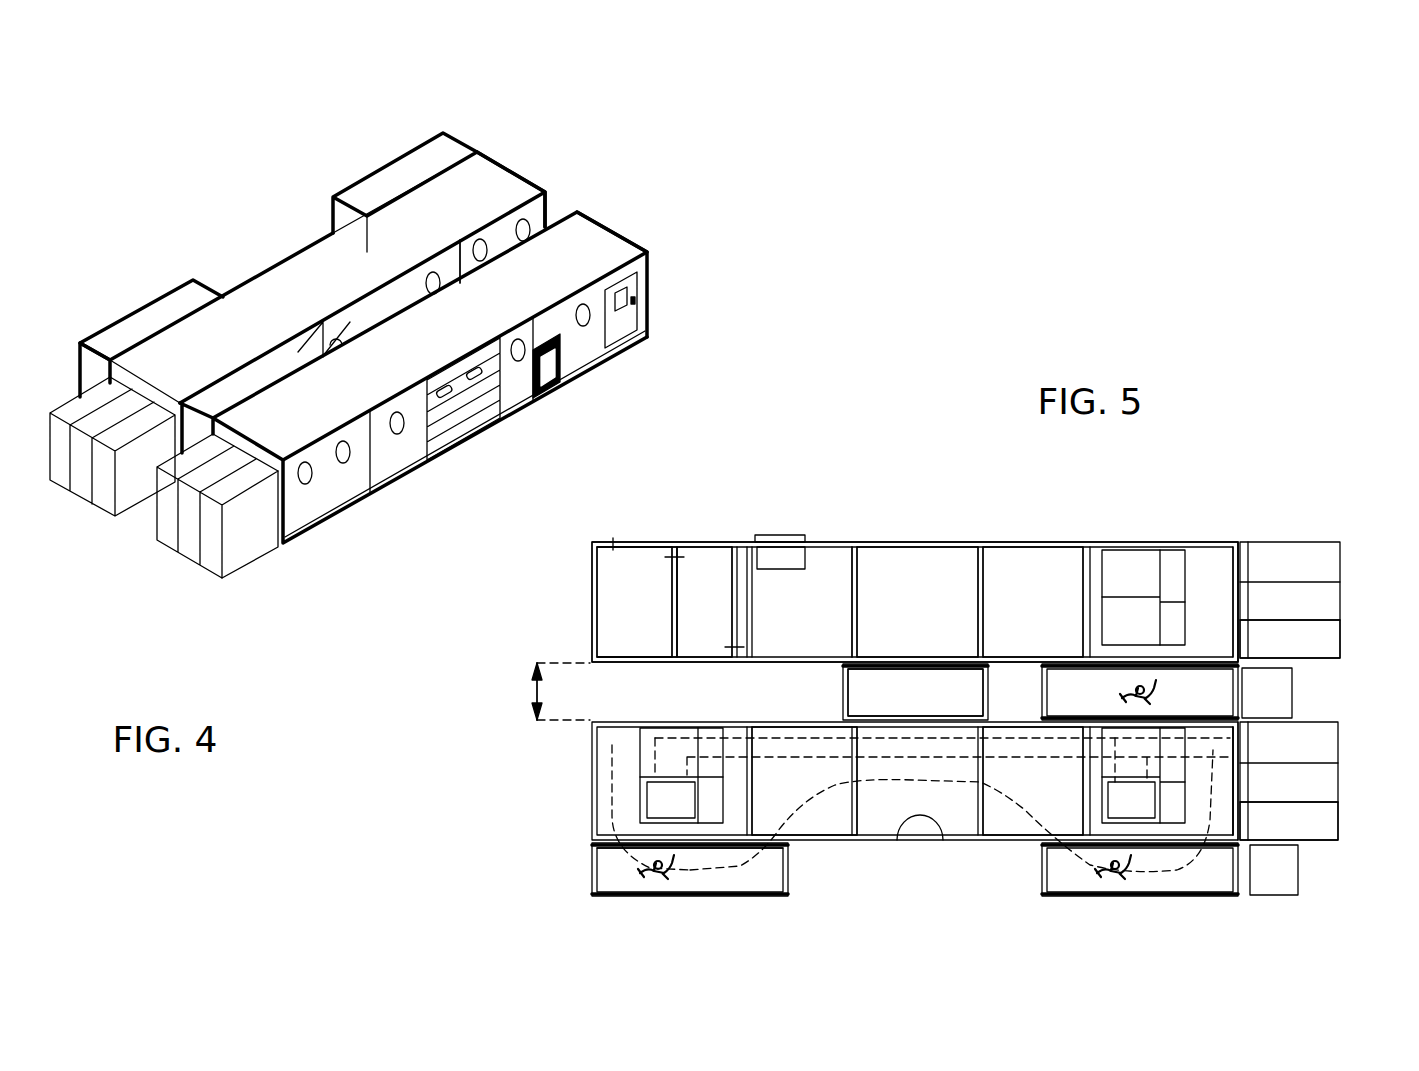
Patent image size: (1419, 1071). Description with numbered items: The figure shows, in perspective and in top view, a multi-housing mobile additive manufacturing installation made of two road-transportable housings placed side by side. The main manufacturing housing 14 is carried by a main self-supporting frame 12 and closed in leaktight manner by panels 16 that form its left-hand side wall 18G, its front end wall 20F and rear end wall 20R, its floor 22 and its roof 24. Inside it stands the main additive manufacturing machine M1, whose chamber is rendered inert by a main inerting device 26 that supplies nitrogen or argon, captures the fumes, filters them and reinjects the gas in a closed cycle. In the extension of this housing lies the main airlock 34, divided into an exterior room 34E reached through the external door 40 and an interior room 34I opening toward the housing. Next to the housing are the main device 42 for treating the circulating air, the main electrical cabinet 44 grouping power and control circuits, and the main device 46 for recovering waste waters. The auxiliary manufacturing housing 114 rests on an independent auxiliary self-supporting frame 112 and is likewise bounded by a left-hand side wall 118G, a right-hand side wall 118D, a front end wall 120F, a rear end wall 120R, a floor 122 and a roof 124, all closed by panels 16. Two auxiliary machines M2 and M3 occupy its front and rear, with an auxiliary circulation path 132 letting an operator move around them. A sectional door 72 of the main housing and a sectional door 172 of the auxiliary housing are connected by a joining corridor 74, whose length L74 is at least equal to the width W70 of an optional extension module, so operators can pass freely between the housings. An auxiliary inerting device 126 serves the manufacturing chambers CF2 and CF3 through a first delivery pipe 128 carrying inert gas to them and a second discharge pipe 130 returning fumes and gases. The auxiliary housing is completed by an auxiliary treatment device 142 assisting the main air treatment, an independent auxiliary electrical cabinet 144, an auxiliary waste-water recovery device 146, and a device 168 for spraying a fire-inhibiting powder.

In FIG. 4, the main self-supporting frame 12 is at (378, 500).
In FIG. 5, the main self-supporting frame 12 is at (846, 668).
In FIG. 4, the main manufacturing housing 14 is at (614, 218).
In FIG. 5, the main manufacturing housing 14 is at (898, 616).
In FIG. 4, the panels 16 is at (507, 187).
In FIG. 4, the left-hand side wall 18G is at (326, 532).
In FIG. 5, the front end wall 20F is at (1237, 563).
In FIG. 5, the rear end wall 20R is at (590, 600).
In FIG. 5, the floor 22 is at (1022, 555).
In FIG. 4, the roof 24 is at (578, 227).
In FIG. 4, the main inerting device 26 is at (210, 575).
In FIG. 5, the main inerting device 26 is at (1308, 562).
In FIG. 5, the main airlock 34 is at (724, 522).
In FIG. 5, the exterior room 34E is at (612, 616).
In FIG. 5, the interior room 34I is at (688, 616).
In FIG. 4, the external door 40 is at (628, 350).
In FIG. 4, the main device for treatment of the air 42 is at (167, 537).
In FIG. 5, the main device for treatment of the air 42 is at (1318, 640).
In FIG. 4, the main electrical cabinet 44 is at (190, 548).
In FIG. 5, the main electrical cabinet 44 is at (1313, 603).
In FIG. 5, the main device for recovery of the waste waters 46 is at (1275, 697).
In FIG. 4, the door 72 is at (472, 430).
In FIG. 5, the door 72 is at (930, 540).
In FIG. 4, the joining corridor 74 is at (380, 300).
In FIG. 5, the joining corridor 74 is at (903, 701).
In FIG. 5, the auxiliary self-supporting frame 112 is at (850, 817).
In FIG. 4, the auxiliary manufacturing housing 114 is at (500, 170).
In FIG. 4, the right-hand side wall 118D is at (240, 290).
In FIG. 4, the left-hand side wall 118G is at (470, 240).
In FIG. 5, the front end wall 120F is at (1238, 782).
In FIG. 5, the rear end wall 120R is at (590, 748).
In FIG. 5, the floor 122 is at (1012, 823).
In FIG. 4, the roof 124 is at (285, 282).
In FIG. 5, the auxiliary inerting device 126 is at (1318, 750).
In FIG. 5, the first delivery pipe 128 is at (783, 757).
In FIG. 5, the second discharge pipe 130 is at (1003, 740).
In FIG. 5, the auxiliary circulation path 132 is at (705, 872).
In FIG. 5, the auxiliary treatment device 142 is at (1317, 825).
In FIG. 5, the auxiliary electrical cabinet 144 is at (1320, 793).
In FIG. 5, the auxiliary device for recovery of the waste waters 146 is at (1280, 878).
In FIG. 5, the device for spraying a powder 168 is at (927, 833).
In FIG. 5, the door 172 is at (900, 712).
In FIG. 5, the main additive manufacturing machine M1 is at (1122, 555).
In FIG. 5, the auxiliary additive manufacturing machine M2 is at (1152, 827).
In FIG. 5, the auxiliary additive manufacturing machine M3 is at (647, 795).
In FIG. 5, the manufacturing chamber CF2 is at (1113, 820).
In FIG. 5, the manufacturing chamber CF3 is at (653, 820).
In FIG. 5, the width of the extension module W70 is at (529, 691).
In FIG. 5, the length of the joining corridor L74 is at (564, 691).